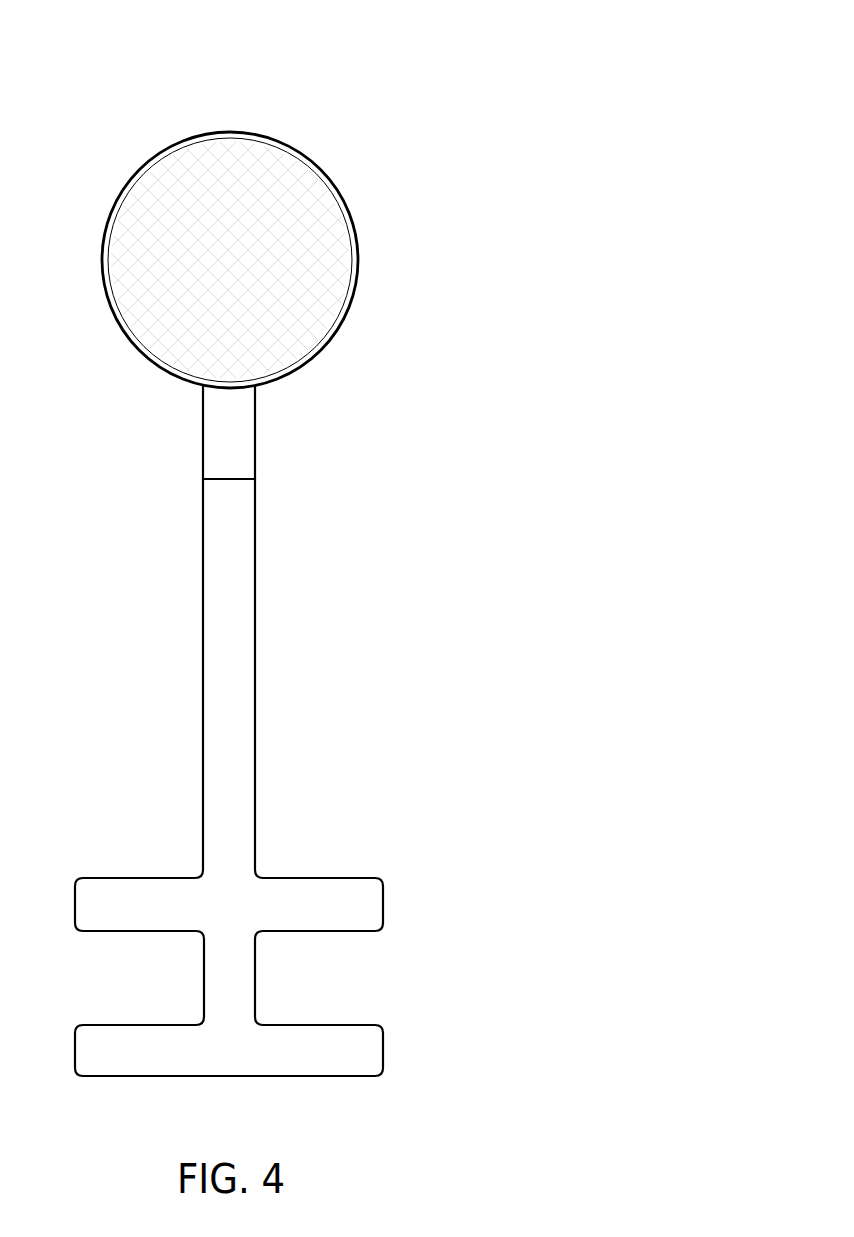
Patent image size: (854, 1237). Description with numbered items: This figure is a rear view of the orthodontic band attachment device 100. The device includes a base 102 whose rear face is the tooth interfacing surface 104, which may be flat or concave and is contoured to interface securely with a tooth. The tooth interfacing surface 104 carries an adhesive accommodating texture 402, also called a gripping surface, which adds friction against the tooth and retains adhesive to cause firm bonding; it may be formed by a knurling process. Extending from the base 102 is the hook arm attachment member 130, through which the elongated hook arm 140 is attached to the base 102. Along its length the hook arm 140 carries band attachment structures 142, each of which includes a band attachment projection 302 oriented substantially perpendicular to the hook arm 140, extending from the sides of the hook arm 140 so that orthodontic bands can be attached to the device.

The orthodontic band attachment device 100 is at (386, 116).
The base 102 is at (354, 262).
The tooth interfacing surface 104 is at (297, 330).
The adhesive accommodating texture 402 is at (138, 230).
The hook arm attachment member 130 is at (203, 435).
The hook arm 140 is at (256, 646).
The band attachment structure 142 is at (405, 887).
The band attachment projection 302 is at (135, 892).